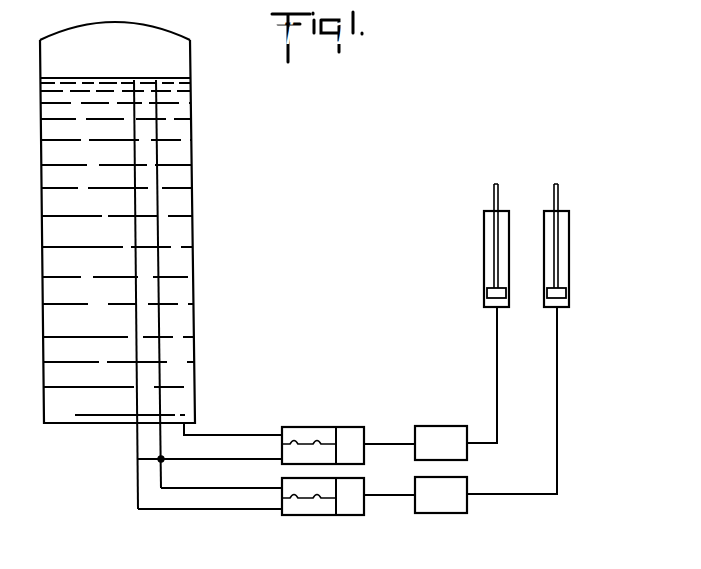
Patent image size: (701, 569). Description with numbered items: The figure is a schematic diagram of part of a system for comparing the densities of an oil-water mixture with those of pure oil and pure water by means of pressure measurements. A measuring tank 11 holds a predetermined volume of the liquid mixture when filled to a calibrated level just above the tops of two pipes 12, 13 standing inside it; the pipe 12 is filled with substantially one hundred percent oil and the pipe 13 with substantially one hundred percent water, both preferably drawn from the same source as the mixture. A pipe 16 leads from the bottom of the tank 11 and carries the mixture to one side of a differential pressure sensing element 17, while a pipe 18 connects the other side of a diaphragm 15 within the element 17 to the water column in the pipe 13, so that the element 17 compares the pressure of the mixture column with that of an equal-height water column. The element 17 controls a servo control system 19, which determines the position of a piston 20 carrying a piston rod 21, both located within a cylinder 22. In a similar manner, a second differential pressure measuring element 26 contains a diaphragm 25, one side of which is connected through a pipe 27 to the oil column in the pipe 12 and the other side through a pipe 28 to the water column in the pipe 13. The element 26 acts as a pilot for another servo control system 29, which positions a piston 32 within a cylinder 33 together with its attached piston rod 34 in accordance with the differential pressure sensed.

The measuring tank 11 is at (194, 174).
The pipe 12 is at (158, 263).
The pipe 13 is at (135, 285).
The diaphragm 15 is at (308, 441).
The pipe 16 is at (212, 434).
The differential pressure sensing element 17 is at (325, 426).
The pipe 18 is at (237, 459).
The servo control system 19 is at (436, 426).
The piston 20 is at (487, 289).
The piston rod 21 is at (500, 196).
The cylinder 22 is at (483, 245).
The diaphragm 25 is at (310, 505).
The differential pressure measuring element 26 is at (329, 516).
The pipe 27 is at (237, 487).
The pipe 28 is at (207, 512).
The servo control system 29 is at (433, 514).
The piston 32 is at (569, 294).
The cylinder 33 is at (569, 258).
The piston rod 34 is at (560, 198).